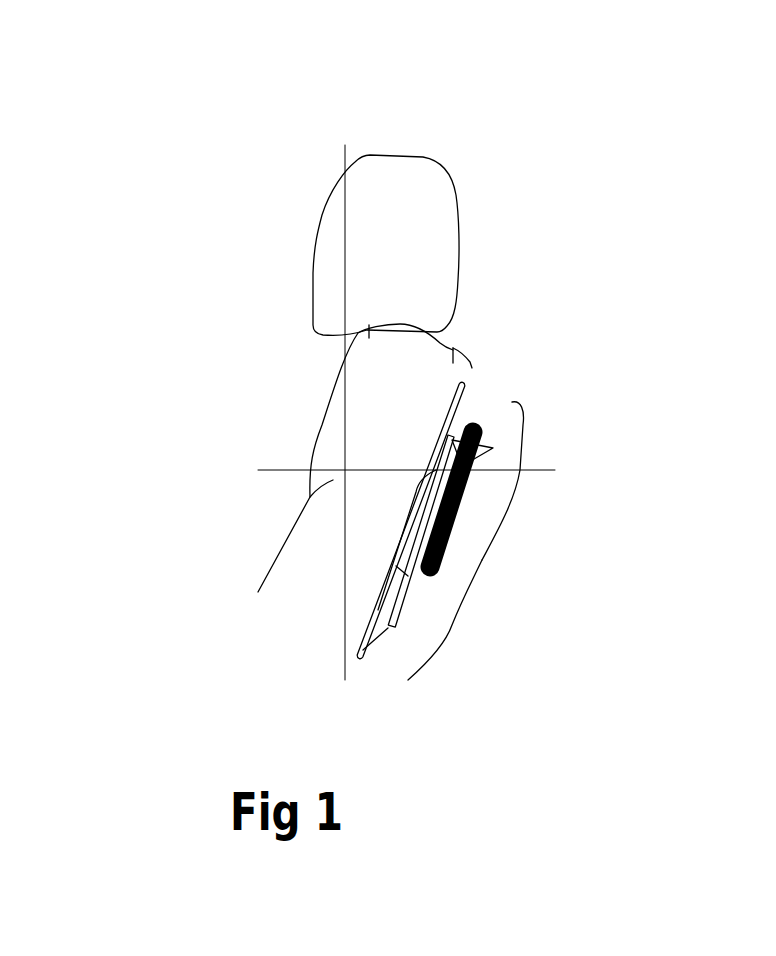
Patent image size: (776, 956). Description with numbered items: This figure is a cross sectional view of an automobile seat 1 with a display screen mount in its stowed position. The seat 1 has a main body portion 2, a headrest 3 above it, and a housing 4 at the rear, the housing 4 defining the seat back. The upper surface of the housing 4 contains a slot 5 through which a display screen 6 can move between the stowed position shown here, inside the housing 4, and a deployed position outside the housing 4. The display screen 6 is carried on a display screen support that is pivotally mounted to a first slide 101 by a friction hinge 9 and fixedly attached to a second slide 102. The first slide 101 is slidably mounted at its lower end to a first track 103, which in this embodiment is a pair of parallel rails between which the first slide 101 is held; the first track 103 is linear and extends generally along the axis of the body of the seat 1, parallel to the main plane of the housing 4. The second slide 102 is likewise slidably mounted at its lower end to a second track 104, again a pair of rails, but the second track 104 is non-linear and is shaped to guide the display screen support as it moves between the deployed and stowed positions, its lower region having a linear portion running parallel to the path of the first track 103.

The seat 1 is at (263, 354).
The main body portion 2 is at (313, 450).
The headrest 3 is at (437, 160).
The housing 4 is at (467, 602).
The slot 5 is at (507, 395).
The display screen 6 is at (463, 496).
The friction hinge 9 is at (418, 555).
The first slide 101 is at (418, 573).
The second slide 102 is at (393, 628).
The first track 103 is at (448, 436).
The second track 104 is at (383, 610).